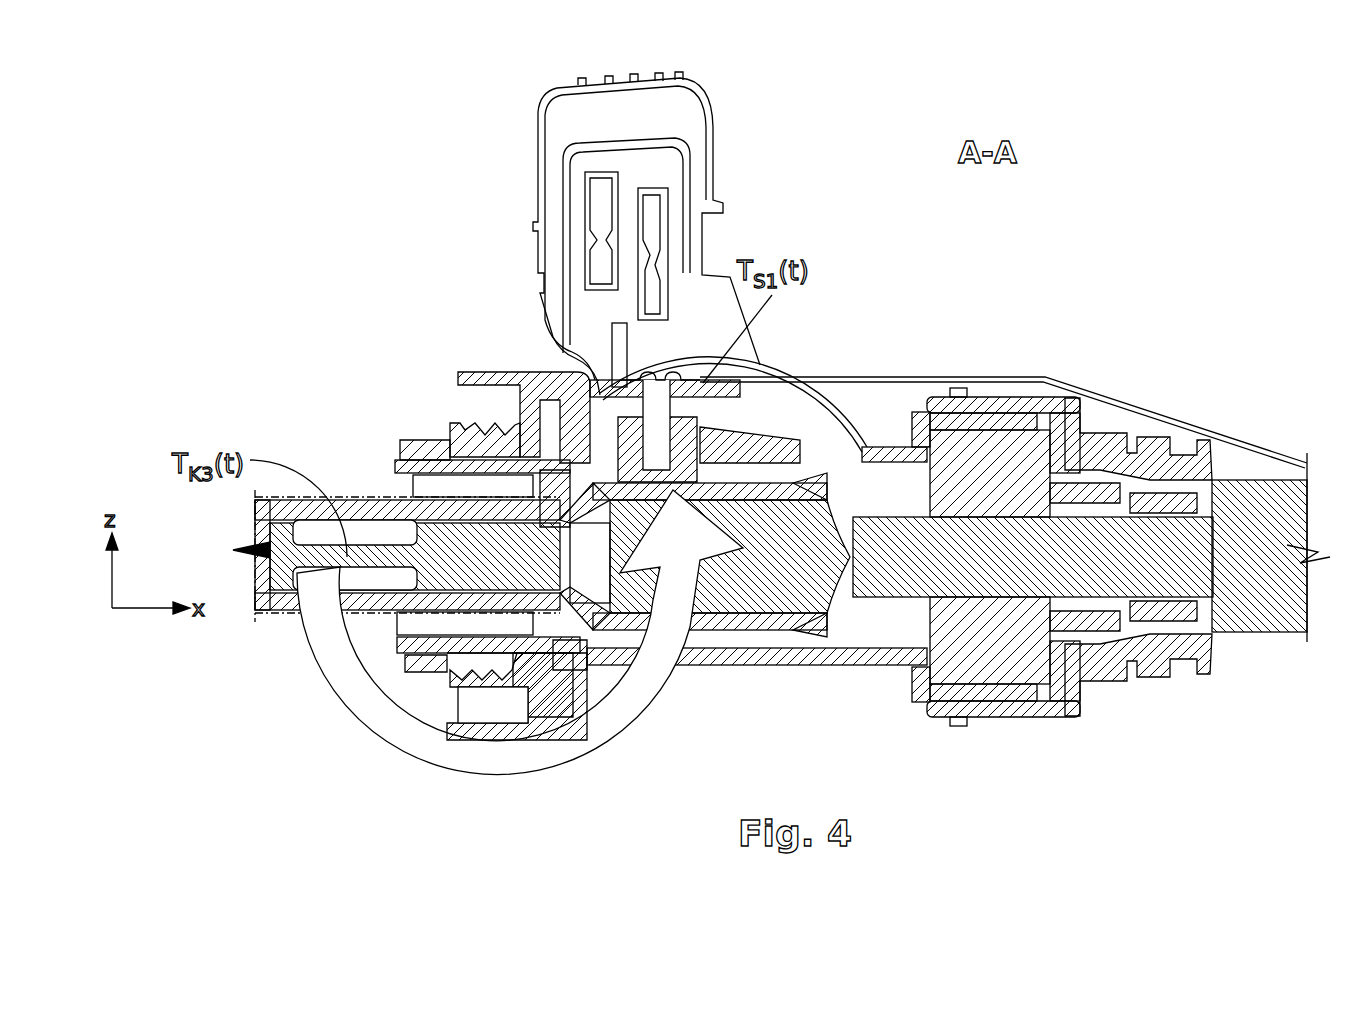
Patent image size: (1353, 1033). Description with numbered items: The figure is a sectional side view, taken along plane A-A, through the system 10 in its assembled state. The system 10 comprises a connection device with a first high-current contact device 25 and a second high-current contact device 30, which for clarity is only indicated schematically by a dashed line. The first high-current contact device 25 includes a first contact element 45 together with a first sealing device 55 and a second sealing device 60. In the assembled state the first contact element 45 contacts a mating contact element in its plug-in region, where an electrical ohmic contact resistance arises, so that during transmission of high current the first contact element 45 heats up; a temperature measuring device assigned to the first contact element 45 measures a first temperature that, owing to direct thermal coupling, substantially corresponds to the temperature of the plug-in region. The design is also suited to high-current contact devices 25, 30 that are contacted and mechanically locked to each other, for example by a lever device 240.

The system 10 is at (895, 115).
The lever device 240 is at (755, 213).
The second high-current contact device 30 is at (457, 447).
The first high-current contact device 25 is at (833, 713).
The first contact element 45 is at (730, 627).
The first sealing device 55 is at (517, 667).
The second sealing device 60 is at (975, 668).